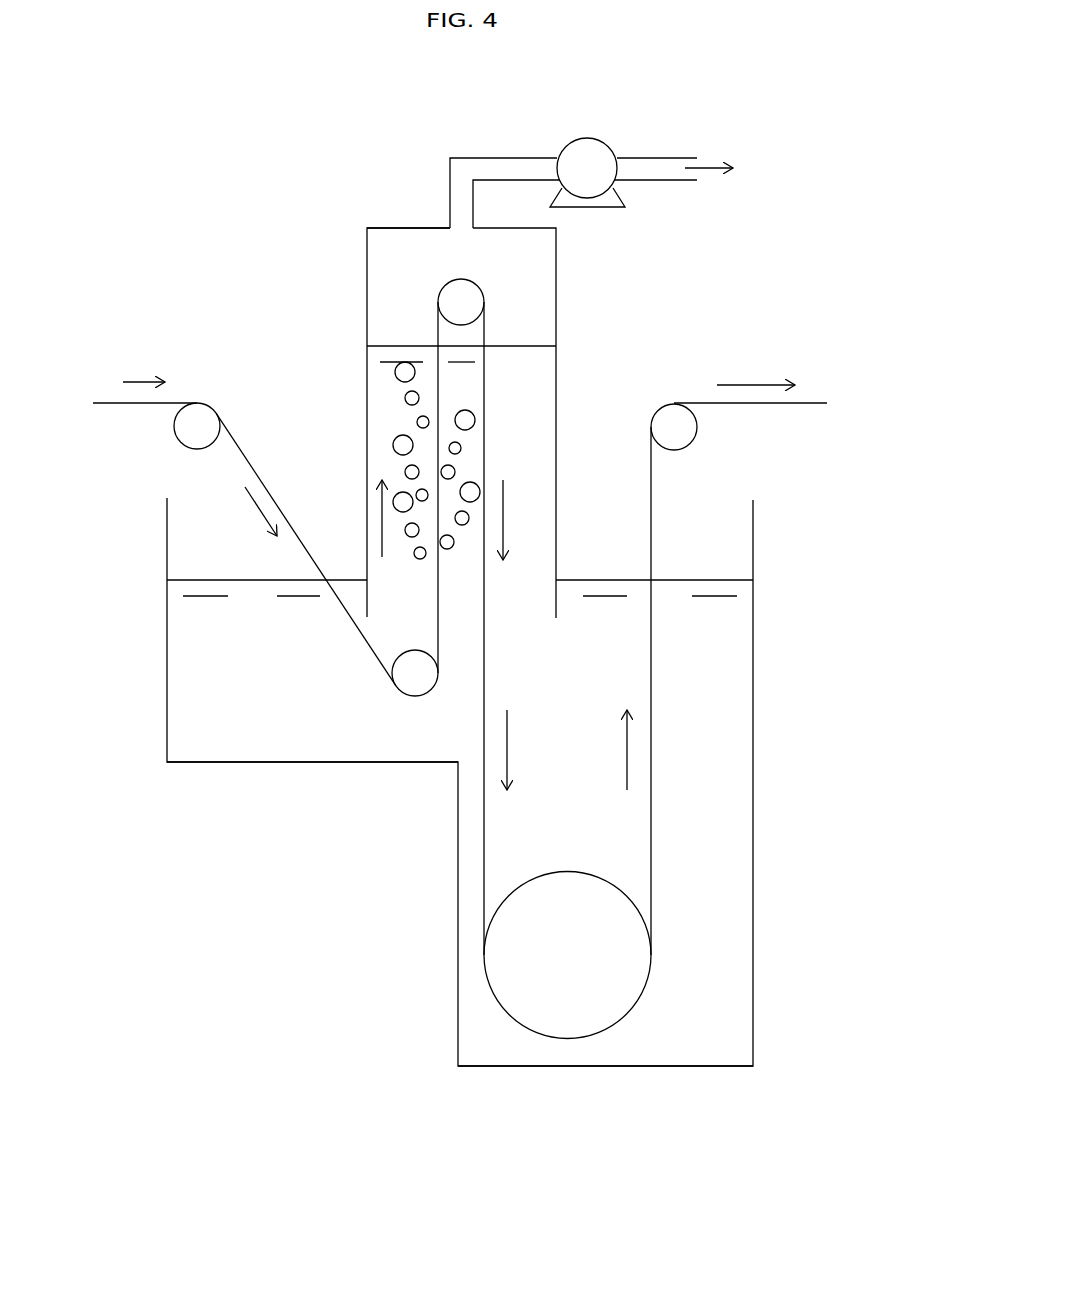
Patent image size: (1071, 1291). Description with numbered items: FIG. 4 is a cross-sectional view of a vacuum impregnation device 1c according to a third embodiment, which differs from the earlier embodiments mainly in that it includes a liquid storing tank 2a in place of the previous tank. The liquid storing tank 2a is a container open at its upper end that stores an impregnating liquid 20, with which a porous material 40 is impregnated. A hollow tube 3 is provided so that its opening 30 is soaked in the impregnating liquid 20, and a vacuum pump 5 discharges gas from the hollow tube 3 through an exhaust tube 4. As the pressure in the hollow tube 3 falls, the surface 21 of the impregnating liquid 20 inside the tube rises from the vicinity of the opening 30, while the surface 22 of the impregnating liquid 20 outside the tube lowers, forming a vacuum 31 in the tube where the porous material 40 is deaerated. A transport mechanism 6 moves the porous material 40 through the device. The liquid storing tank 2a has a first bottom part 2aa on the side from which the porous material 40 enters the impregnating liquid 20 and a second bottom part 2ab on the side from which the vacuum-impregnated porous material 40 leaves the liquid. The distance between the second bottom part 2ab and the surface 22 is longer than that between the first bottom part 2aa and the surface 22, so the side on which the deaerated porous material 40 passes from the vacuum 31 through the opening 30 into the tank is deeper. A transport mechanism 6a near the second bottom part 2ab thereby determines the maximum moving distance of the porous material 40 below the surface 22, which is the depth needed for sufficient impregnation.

The vacuum impregnation device 1c is at (772, 128).
The liquid storing tank 2a is at (753, 657).
The first bottom part 2aa is at (255, 763).
The second bottom part 2ab is at (497, 1068).
The hollow tube 3 is at (557, 290).
The exhaust tube 4 is at (513, 157).
The vacuum pump 5 is at (588, 138).
The transport mechanism 6 is at (197, 410).
The transport mechanism 6a is at (568, 1022).
The impregnating liquid 20 is at (723, 1058).
The surface 21 is at (523, 343).
The surface 22 is at (198, 578).
The opening 30 is at (542, 628).
The vacuum 31 is at (402, 237).
The porous material 40 is at (107, 398).